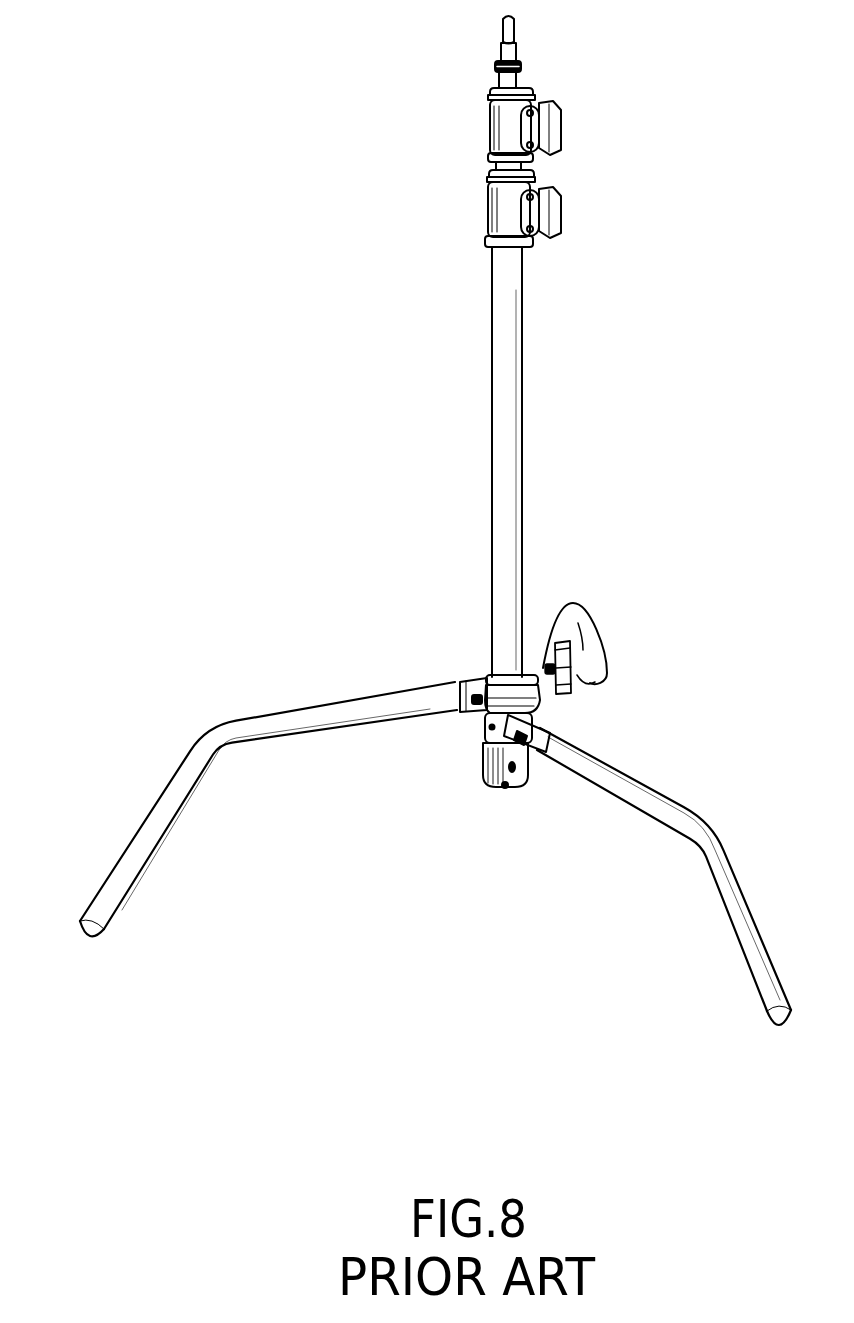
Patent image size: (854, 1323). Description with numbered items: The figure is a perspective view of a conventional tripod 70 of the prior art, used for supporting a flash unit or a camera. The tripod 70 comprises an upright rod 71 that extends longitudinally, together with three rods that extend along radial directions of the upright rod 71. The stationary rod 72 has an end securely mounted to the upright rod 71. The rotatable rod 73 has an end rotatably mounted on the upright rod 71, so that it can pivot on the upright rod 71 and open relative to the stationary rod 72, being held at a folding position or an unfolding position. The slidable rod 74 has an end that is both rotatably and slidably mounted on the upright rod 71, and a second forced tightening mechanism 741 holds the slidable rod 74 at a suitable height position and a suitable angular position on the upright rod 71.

The conventional tripod 70 is at (435, 520).
The upright rod 71 is at (512, 338).
The stationary rod 72 is at (660, 817).
The rotatable rod 73 is at (573, 610).
The slidable rod 74 is at (300, 725).
The second forced tightening mechanism 741 is at (568, 668).